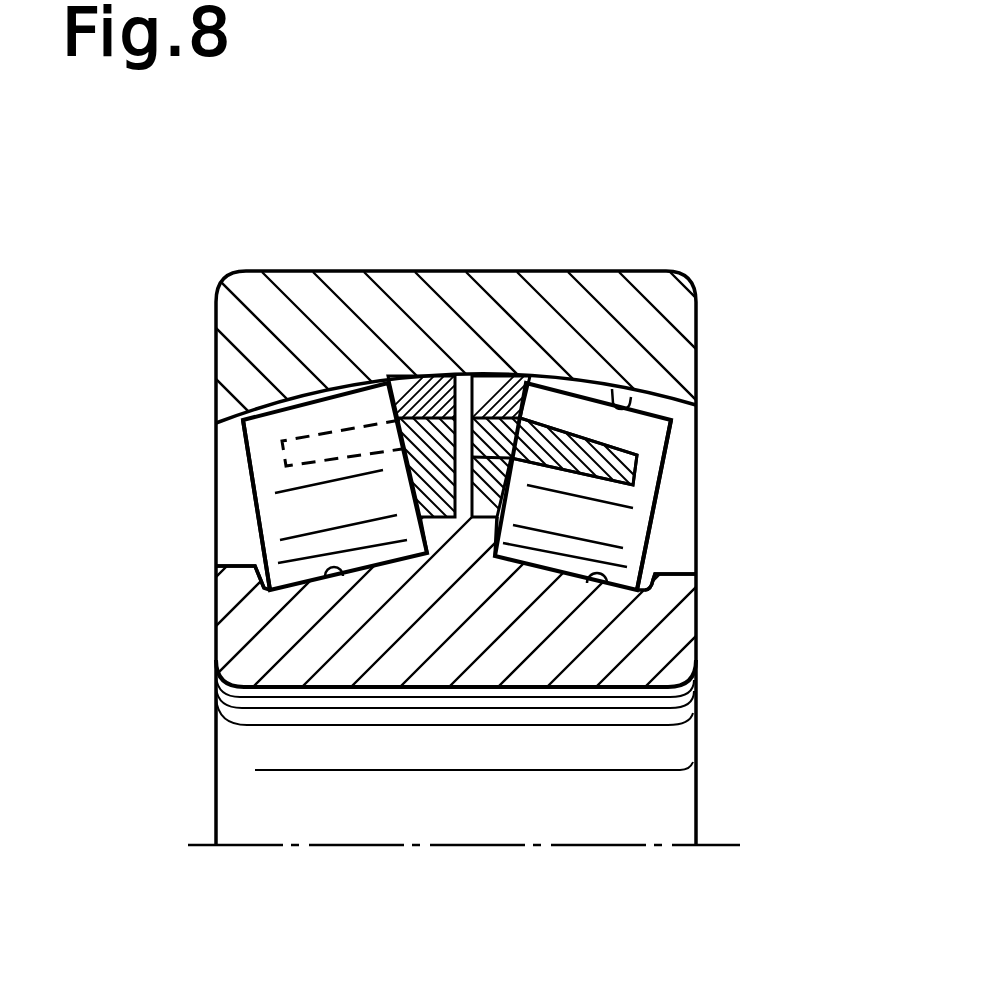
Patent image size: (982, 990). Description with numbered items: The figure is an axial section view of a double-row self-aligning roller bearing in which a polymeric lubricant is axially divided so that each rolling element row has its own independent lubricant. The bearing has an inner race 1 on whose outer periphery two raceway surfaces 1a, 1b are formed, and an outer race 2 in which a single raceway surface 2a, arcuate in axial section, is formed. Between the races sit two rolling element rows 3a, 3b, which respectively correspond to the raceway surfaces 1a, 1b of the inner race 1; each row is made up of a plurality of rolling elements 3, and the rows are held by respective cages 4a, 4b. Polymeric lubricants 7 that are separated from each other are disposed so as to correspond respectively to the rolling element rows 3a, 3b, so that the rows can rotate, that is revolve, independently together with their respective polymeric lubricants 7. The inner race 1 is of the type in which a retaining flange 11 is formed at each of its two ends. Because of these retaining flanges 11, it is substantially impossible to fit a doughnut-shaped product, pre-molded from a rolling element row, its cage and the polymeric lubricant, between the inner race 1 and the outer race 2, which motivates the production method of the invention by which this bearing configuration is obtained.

The inner race 1 is at (653, 667).
The raceway surface 1a is at (598, 584).
The raceway surface 1b is at (325, 576).
The outer race 2 is at (550, 283).
The raceway surface 2a is at (628, 399).
The rolling element 3 is at (263, 470).
The rolling element row 3a is at (677, 553).
The rolling element row 3b is at (230, 539).
The cage 4a is at (625, 450).
The cage 4b is at (396, 441).
The polymeric lubricant 7 is at (413, 377).
The retaining flange 11 is at (242, 580).